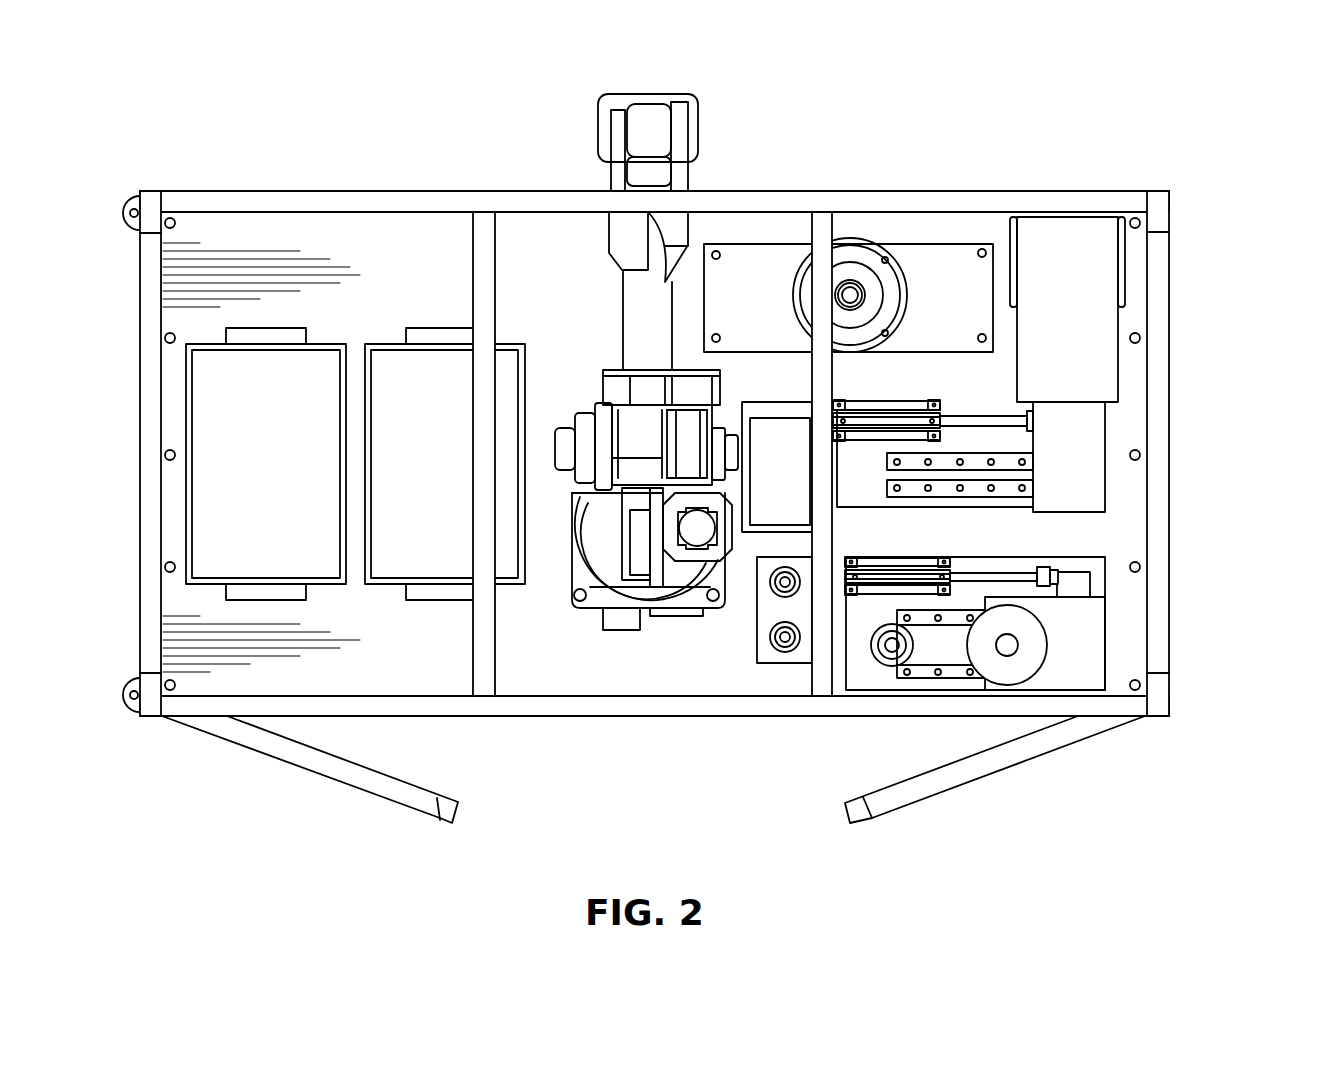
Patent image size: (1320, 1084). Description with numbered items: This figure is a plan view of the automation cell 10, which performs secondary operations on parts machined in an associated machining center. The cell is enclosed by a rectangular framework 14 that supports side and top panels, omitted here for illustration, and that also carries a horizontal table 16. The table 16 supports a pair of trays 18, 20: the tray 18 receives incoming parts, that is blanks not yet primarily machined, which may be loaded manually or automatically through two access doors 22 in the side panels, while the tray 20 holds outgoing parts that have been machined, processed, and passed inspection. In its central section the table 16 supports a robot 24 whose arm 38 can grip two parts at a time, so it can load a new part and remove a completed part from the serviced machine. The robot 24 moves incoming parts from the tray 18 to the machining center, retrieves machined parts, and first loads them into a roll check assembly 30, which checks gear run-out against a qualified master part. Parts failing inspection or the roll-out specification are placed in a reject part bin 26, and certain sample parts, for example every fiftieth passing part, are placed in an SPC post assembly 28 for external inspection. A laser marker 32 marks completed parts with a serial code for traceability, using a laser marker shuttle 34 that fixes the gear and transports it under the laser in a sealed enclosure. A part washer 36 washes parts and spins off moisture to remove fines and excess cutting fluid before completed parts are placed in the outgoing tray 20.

The automation cell 10 is at (1195, 158).
The rectangular framework 14 is at (1160, 287).
The horizontal table 16 is at (404, 269).
The tray 18 is at (276, 469).
The tray 20 is at (447, 469).
The access doors 22 is at (362, 783).
The robot 24 is at (583, 641).
The reject part bin 26 is at (794, 477).
The SPC post assembly 28 is at (757, 615).
The roll check assembly 30 is at (1085, 652).
The laser marker 32 is at (1081, 471).
The laser marker shuttle 34 is at (993, 408).
The part washer 36 is at (886, 252).
The arm 38 is at (692, 180).